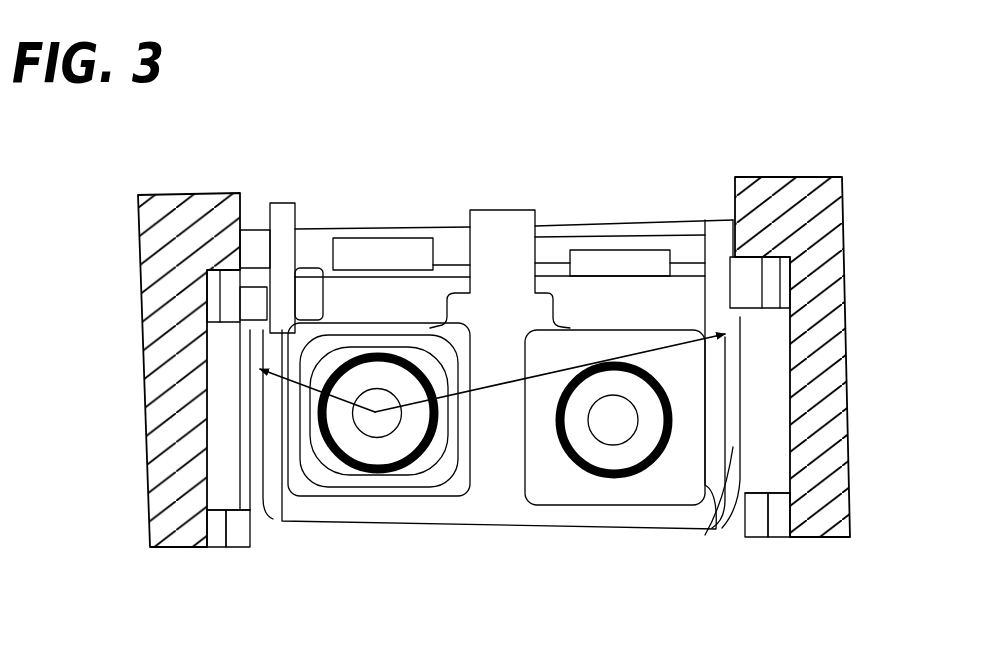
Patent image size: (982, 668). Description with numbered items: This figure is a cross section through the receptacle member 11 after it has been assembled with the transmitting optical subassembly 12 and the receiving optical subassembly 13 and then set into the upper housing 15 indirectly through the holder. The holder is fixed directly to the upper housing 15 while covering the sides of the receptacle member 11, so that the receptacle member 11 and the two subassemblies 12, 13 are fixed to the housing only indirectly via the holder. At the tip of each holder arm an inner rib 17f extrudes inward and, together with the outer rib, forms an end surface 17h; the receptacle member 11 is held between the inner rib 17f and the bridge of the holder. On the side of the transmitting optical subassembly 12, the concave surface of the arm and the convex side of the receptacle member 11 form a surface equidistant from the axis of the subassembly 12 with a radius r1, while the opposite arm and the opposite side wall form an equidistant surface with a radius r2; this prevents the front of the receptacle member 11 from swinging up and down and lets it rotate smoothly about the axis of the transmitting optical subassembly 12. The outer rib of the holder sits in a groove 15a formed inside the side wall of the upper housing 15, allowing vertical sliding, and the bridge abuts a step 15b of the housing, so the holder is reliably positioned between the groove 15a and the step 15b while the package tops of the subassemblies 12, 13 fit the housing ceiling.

The receptacle member 11 is at (480, 525).
The transmitting optical subassembly 12 is at (378, 454).
The receiving optical subassembly 13 is at (600, 457).
The upper housing 15 is at (140, 290).
The groove 15a is at (220, 543).
The step 15b is at (240, 541).
The end surface 17h is at (232, 403).
The inner rib 17f is at (283, 519).
The radius r1 is at (262, 362).
The radius r2 is at (560, 370).